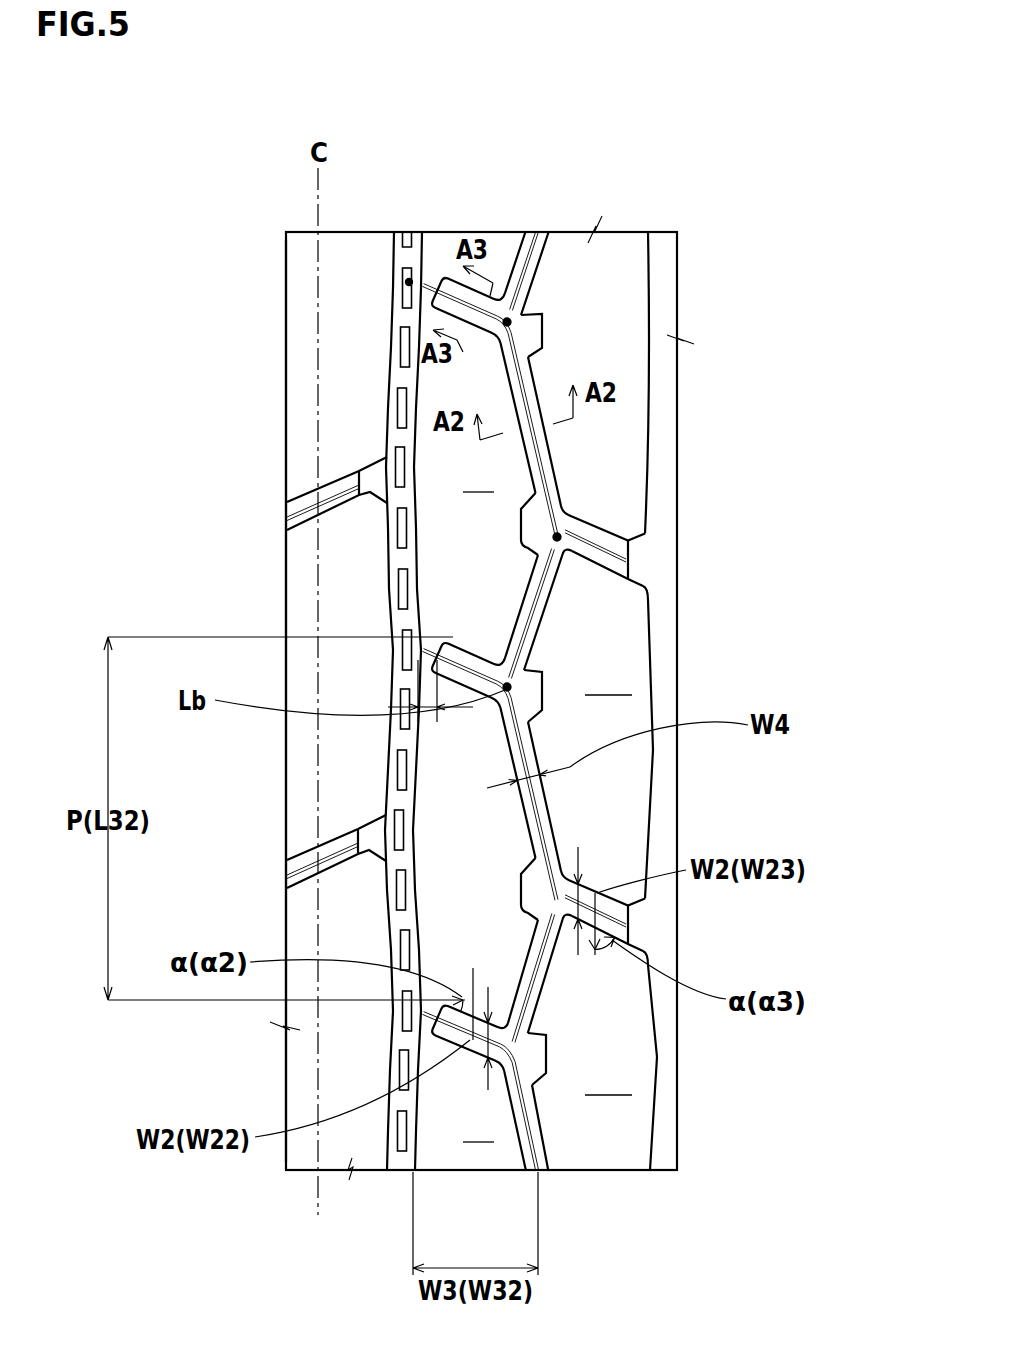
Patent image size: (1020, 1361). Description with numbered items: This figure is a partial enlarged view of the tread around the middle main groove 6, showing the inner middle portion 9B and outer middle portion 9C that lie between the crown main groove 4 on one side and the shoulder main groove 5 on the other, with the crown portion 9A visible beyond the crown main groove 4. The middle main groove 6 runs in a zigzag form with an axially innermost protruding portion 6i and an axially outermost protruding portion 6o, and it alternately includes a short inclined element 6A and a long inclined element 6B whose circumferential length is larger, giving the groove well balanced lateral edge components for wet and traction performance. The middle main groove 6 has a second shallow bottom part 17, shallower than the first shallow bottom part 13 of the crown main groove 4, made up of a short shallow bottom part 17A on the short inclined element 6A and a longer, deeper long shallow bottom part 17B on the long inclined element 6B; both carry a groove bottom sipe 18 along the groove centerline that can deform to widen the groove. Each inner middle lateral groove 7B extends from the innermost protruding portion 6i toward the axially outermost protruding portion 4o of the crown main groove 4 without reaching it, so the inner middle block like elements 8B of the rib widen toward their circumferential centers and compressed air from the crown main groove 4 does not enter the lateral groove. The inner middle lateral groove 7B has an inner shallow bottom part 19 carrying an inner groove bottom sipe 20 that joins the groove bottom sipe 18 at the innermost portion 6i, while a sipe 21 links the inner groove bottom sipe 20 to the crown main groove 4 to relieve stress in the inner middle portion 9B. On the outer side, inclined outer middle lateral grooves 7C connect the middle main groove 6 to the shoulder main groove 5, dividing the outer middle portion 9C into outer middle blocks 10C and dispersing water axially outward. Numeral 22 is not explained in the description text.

The crown main groove 4 is at (299, 642).
The axially outermost protruding portion of the crown main groove 4o is at (407, 282).
The shoulder main groove 5 is at (668, 221).
The middle main groove 6 is at (484, 642).
The short inclined element 6A is at (556, 611).
The long inclined element 6B is at (560, 441).
The axially innermost protruding portion 6i is at (484, 537).
The axially outermost protruding portion 6o is at (572, 508).
The inner middle lateral groove 7B is at (342, 685).
The outer middle lateral groove 7C is at (620, 514).
The inner middle block like element 8B is at (478, 802).
The crown portion 9A is at (282, 638).
The inner middle portion 9B is at (318, 629).
The outer middle portion 9C is at (675, 605).
The outer middle block 10C is at (608, 880).
The first shallow bottom part 13 is at (311, 488).
The second shallow bottom part 17 is at (318, 673).
The short shallow bottom part 17A is at (513, 365).
The long shallow bottom part 17B is at (497, 350).
The groove bottom sipe 18 is at (545, 363).
The inner shallow bottom part 19 is at (472, 655).
The inner groove bottom sipe 20 is at (533, 570).
The sipe 21 is at (430, 1062).
The groove edge portion 22 is at (510, 857).